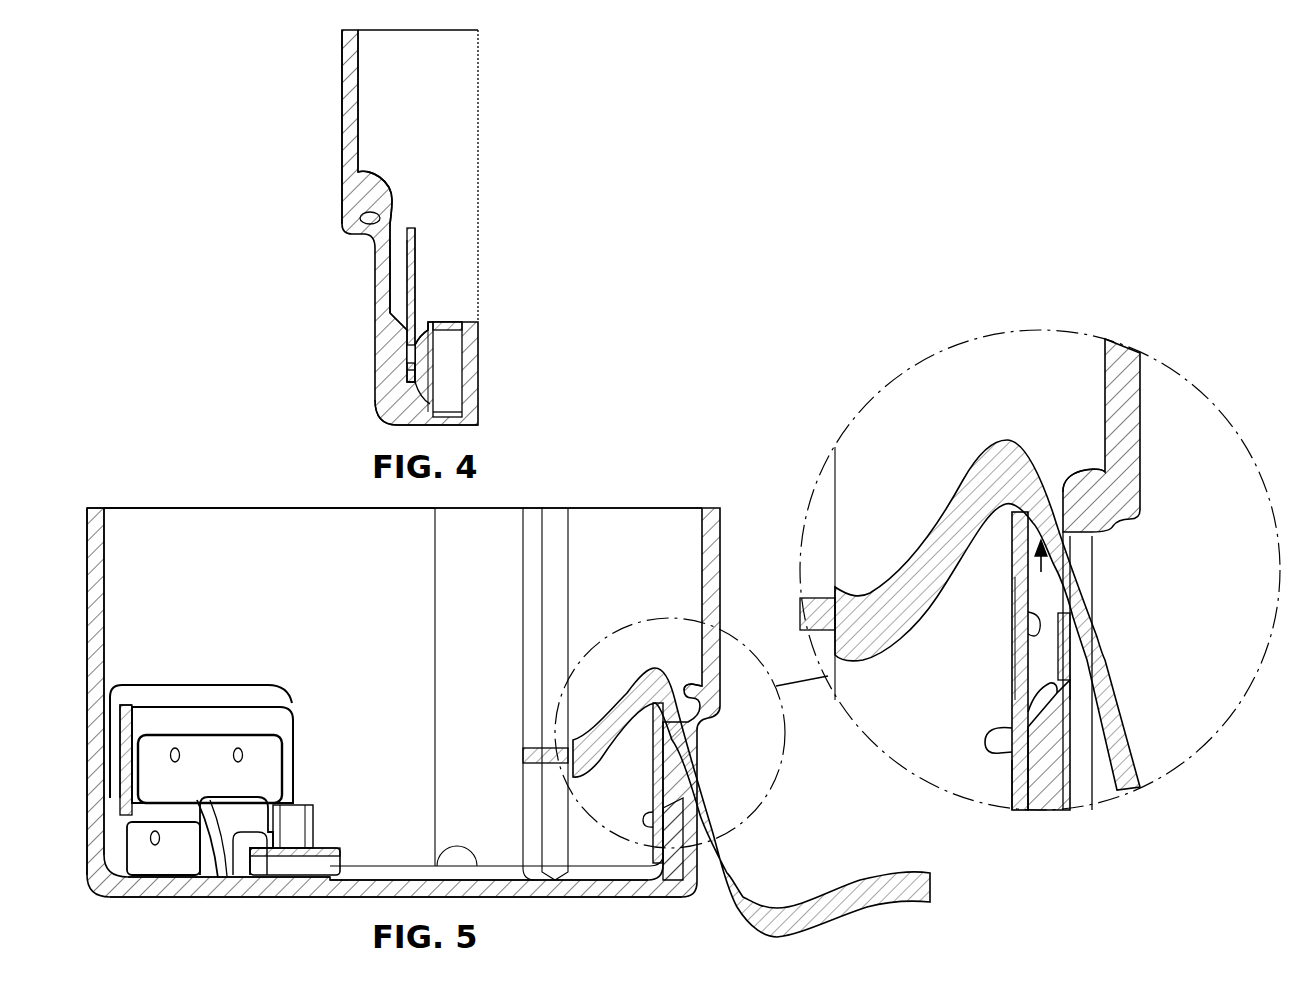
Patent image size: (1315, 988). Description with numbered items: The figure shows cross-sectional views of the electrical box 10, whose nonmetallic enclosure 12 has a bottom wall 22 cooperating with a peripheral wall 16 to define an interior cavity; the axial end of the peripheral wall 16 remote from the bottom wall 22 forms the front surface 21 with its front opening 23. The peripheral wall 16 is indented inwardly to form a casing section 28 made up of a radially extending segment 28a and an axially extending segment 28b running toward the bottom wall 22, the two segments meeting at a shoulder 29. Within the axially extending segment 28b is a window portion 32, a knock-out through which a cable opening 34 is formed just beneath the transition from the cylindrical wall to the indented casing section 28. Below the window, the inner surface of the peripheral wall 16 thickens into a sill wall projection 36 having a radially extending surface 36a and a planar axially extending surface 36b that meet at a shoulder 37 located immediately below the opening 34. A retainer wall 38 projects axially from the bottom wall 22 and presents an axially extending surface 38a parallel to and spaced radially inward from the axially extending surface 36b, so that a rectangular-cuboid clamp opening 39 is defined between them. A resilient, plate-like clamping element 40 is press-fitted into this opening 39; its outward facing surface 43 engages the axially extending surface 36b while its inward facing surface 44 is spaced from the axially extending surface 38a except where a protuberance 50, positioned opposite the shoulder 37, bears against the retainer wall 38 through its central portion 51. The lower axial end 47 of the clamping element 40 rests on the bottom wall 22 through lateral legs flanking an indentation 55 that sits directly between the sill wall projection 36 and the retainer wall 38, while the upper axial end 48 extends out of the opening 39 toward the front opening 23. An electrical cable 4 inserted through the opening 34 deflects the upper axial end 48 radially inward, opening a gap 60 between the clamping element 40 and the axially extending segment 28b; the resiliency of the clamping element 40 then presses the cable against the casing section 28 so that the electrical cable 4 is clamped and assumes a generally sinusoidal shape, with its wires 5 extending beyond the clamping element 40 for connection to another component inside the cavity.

In FIG. 5, the electrical cable 4 is at (790, 912).
In FIG. 5, the wires 5 is at (523, 755).
In FIG. 5, the electrical box 10 is at (633, 493).
In FIG. 4, the enclosure 12 is at (328, 62).
In FIG. 5, the enclosure 12 is at (178, 500).
In FIG. 4, the peripheral wall 16 is at (350, 106).
In FIG. 5, the peripheral wall 16 is at (98, 594).
In FIG. 5, the front surface 21 is at (98, 508).
In FIG. 4, the bottom wall 22 is at (462, 420).
In FIG. 5, the bottom wall 22 is at (572, 897).
In FIG. 5, the front opening 23 is at (232, 508).
In FIG. 5, the casing section 28 is at (185, 678).
In FIG. 4, the radially extending segment 28a is at (368, 221).
In FIG. 5, the radially extending segment 28a is at (1078, 468).
In FIG. 4, the axially extending segment 28b is at (394, 228).
In FIG. 5, the axially extending segment 28b is at (1060, 672).
In FIG. 4, the shoulder 29 is at (356, 183).
In FIG. 5, the window portion 32 is at (1066, 652).
In FIG. 5, the opening 34 is at (1088, 560).
In FIG. 5, the sill wall projection 36 is at (117, 840).
In FIG. 4, the radially extending surface 36a is at (396, 310).
In FIG. 5, the radially extending surface 36a is at (1040, 700).
In FIG. 4, the axially extending surface 36b is at (430, 378).
In FIG. 5, the axially extending surface 36b is at (1018, 782).
In FIG. 4, the shoulder 37 is at (422, 328).
In FIG. 5, the shoulder 37 is at (1028, 720).
In FIG. 5, the retainer wall 38 is at (250, 797).
In FIG. 4, the axially extending surface 38a is at (407, 355).
In FIG. 4, the opening 39 is at (440, 398).
In FIG. 4, the clamping element 40 is at (441, 291).
In FIG. 5, the clamping element 40 is at (280, 715).
In FIG. 4, the outward facing surface 43 is at (398, 262).
In FIG. 5, the outward facing surface 43 is at (1015, 630).
In FIG. 4, the inward facing surface 44 is at (414, 253).
In FIG. 5, the inward facing surface 44 is at (1012, 578).
In FIG. 4, the lower axial end 47 is at (405, 396).
In FIG. 4, the upper axial end 48 is at (410, 228).
In FIG. 5, the upper axial end 48 is at (1010, 470).
In FIG. 4, the protuberance 50 is at (462, 330).
In FIG. 5, the protuberance 50 is at (992, 740).
In FIG. 4, the central portion 51 is at (433, 348).
In FIG. 4, the indentation 55 is at (407, 378).
In FIG. 5, the gap 60 is at (1041, 572).